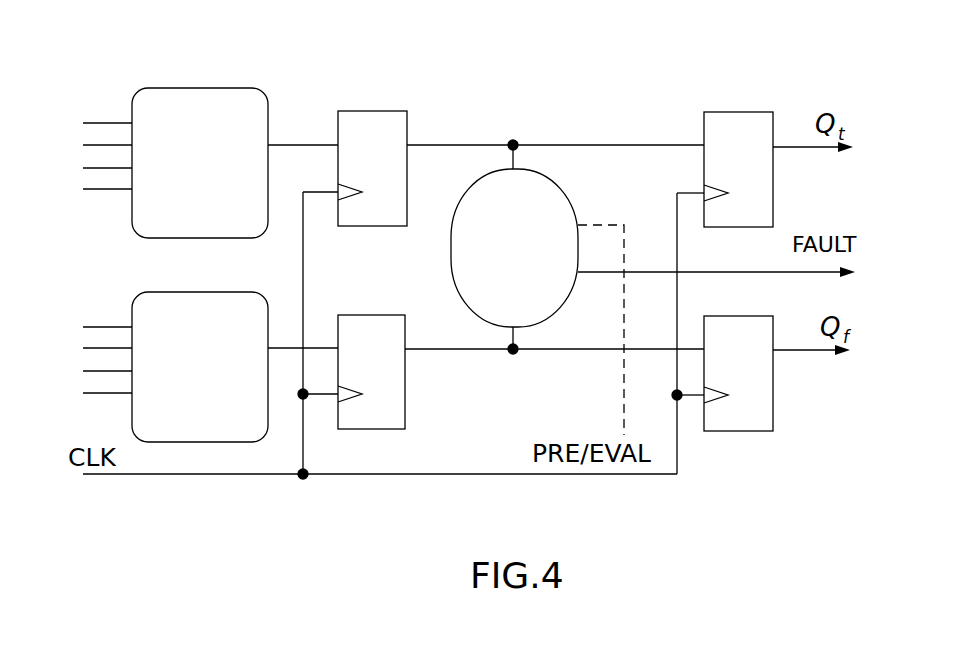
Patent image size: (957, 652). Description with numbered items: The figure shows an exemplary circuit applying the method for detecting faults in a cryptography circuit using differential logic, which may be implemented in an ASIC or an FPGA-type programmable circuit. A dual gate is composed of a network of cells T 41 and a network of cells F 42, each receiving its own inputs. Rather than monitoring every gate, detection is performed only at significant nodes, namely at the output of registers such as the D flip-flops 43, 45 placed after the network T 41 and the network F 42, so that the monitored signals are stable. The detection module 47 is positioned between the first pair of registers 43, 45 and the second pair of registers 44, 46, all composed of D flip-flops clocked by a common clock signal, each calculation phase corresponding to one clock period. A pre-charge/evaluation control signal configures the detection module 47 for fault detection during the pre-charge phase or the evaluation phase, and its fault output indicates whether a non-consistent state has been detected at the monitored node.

The network T 41 is at (190, 108).
The network F 42 is at (184, 328).
The D flip-flop 43 is at (367, 124).
The D flip-flop 44 is at (738, 124).
The D flip-flop 45 is at (369, 329).
The D flip-flop 46 is at (743, 406).
The detection module 47 is at (545, 214).